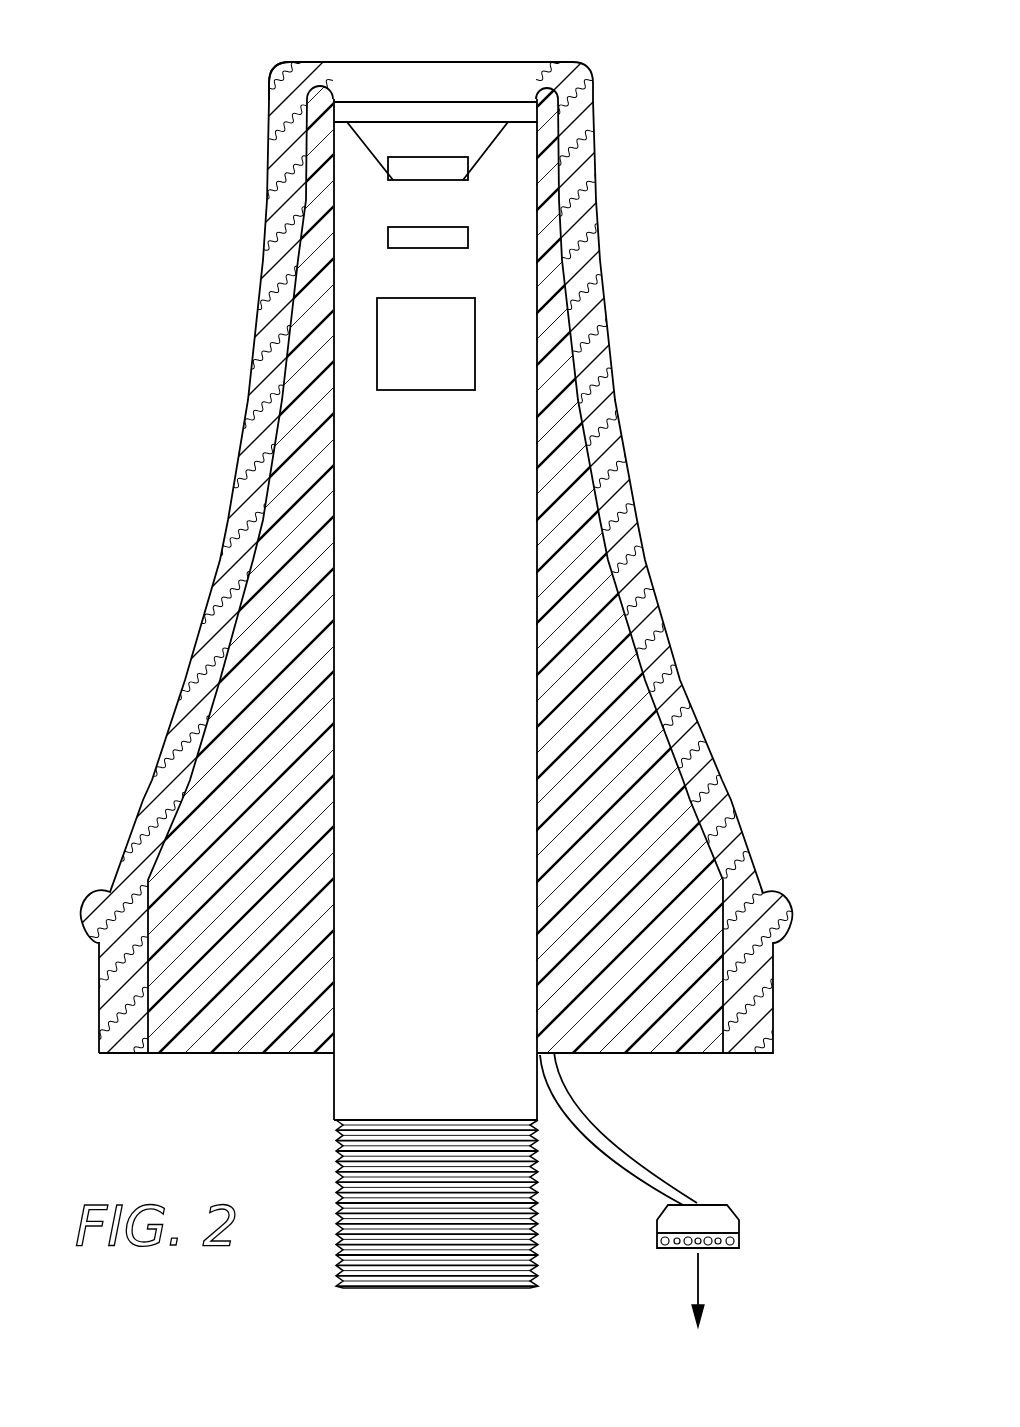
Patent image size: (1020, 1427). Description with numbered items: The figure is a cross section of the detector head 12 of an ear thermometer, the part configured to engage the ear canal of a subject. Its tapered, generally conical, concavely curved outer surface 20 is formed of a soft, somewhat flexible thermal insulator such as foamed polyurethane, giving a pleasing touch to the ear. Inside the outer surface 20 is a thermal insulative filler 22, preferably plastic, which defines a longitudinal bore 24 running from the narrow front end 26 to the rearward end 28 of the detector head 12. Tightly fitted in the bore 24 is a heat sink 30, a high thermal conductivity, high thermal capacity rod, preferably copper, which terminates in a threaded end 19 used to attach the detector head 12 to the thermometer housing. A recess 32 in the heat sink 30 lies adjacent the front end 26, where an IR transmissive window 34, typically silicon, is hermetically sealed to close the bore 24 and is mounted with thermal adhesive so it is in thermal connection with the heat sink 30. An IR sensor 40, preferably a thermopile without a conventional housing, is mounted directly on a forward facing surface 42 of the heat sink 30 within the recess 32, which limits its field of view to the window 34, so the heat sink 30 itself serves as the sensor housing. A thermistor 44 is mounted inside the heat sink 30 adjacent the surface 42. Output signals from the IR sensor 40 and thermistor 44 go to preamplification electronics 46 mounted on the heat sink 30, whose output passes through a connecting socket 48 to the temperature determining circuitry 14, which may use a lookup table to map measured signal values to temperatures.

The detector head 12 is at (710, 371).
The temperature determining circuitry 14 is at (700, 1287).
The threaded end 19 is at (358, 1167).
The outer surface 20 is at (202, 687).
The thermal insulative filler 22 is at (305, 478).
The longitudinal bore 24 is at (336, 1022).
The front end 26 is at (270, 97).
The rearward end 28 is at (740, 1053).
The heat sink 30 is at (456, 935).
The recess 32 is at (473, 140).
The IR transmissive window 34 is at (360, 100).
The IR sensor 40 is at (430, 165).
The forward facing surface 42 is at (395, 180).
The thermistor 44 is at (457, 240).
The preamplification electronics 46 is at (408, 336).
The connecting socket 48 is at (710, 1217).